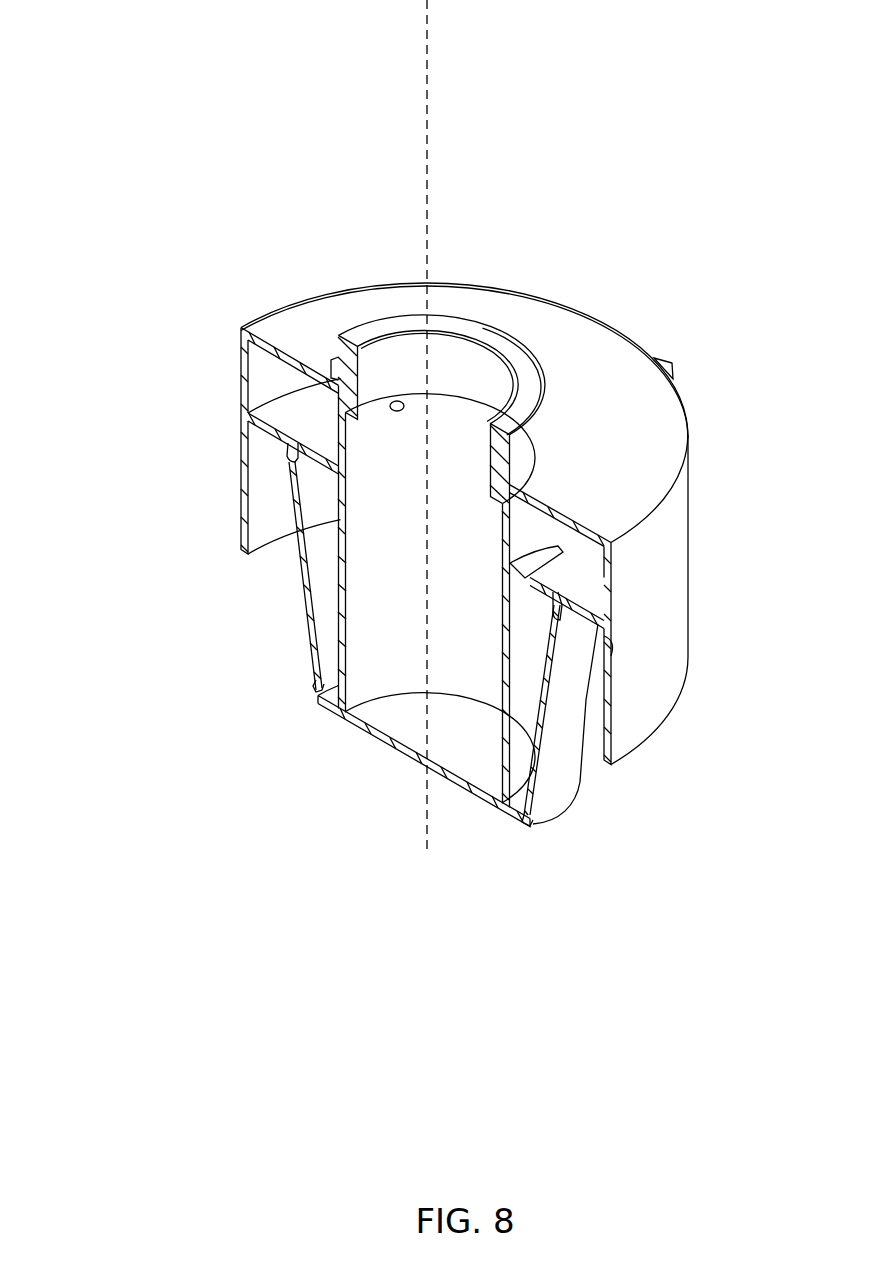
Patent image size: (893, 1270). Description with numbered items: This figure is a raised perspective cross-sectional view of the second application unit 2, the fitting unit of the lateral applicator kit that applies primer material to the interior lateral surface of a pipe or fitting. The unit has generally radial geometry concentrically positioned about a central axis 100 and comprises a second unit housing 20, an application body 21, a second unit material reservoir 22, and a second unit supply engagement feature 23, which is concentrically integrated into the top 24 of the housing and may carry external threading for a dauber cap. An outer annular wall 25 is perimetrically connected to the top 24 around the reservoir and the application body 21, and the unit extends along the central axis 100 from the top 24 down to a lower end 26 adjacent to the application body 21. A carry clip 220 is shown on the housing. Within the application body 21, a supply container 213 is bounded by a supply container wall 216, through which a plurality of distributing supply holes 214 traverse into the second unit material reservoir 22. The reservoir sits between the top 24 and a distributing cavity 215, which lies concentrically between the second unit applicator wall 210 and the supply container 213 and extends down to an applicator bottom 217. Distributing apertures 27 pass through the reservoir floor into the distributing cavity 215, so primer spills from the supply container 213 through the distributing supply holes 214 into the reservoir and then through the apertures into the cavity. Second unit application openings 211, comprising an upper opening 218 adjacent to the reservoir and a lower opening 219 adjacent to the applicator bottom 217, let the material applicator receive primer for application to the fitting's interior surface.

The second application unit 2 is at (214, 84).
The central axis 100 is at (428, 130).
The second unit housing 20 is at (238, 360).
The application body 21 is at (603, 820).
The second unit material reservoir 22 is at (283, 386).
The second unit supply engagement feature 23 is at (540, 338).
The top 24 is at (310, 323).
The outer annular wall 25 is at (644, 735).
The lower end 26 is at (396, 787).
The distributing apertures 27 is at (545, 542).
The second unit applicator wall 210 is at (304, 582).
The second unit application opening 211 is at (293, 463).
The supply container 213 is at (383, 642).
The distributing supply holes 214 is at (393, 411).
The distributing cavity 215 is at (322, 602).
The supply container wall 216 is at (505, 605).
The applicator bottom 217 is at (395, 725).
The upper opening 218 is at (570, 600).
The lower opening 219 is at (521, 810).
The carry clip 220 is at (660, 353).